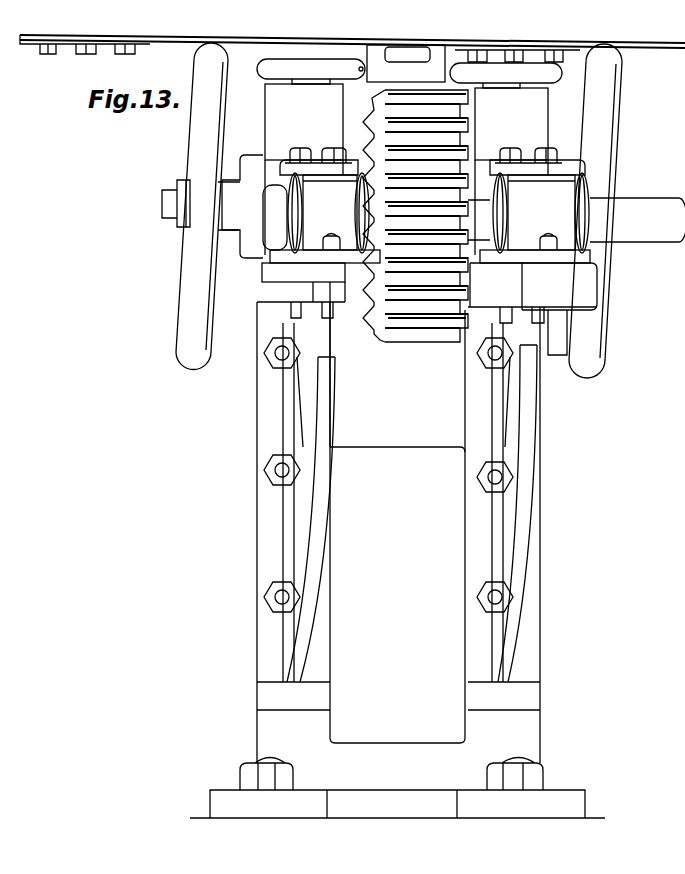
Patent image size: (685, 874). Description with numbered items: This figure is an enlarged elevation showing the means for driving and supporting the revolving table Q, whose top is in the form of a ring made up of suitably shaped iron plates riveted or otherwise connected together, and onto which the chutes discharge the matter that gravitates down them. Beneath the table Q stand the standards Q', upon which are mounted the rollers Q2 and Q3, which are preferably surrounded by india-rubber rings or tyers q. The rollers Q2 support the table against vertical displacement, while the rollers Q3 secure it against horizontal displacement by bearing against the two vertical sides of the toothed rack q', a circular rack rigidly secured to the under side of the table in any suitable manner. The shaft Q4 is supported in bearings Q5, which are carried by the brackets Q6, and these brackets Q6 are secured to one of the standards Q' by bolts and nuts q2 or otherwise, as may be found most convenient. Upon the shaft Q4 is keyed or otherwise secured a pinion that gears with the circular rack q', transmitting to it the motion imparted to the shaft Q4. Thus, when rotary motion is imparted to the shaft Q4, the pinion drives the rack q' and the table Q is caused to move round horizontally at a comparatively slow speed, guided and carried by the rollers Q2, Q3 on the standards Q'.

The revolving table Q is at (352, 38).
The india-rubber rings or tyers q is at (399, 210).
The standards Q' is at (397, 451).
The toothed rack q' is at (406, 63).
The rollers Q2 is at (197, 152).
The rollers Q3 is at (374, 192).
The shaft Q4 is at (423, 206).
The bearings Q5 is at (429, 251).
The brackets Q6 is at (411, 502).
The bolts and nuts q2 is at (275, 595).